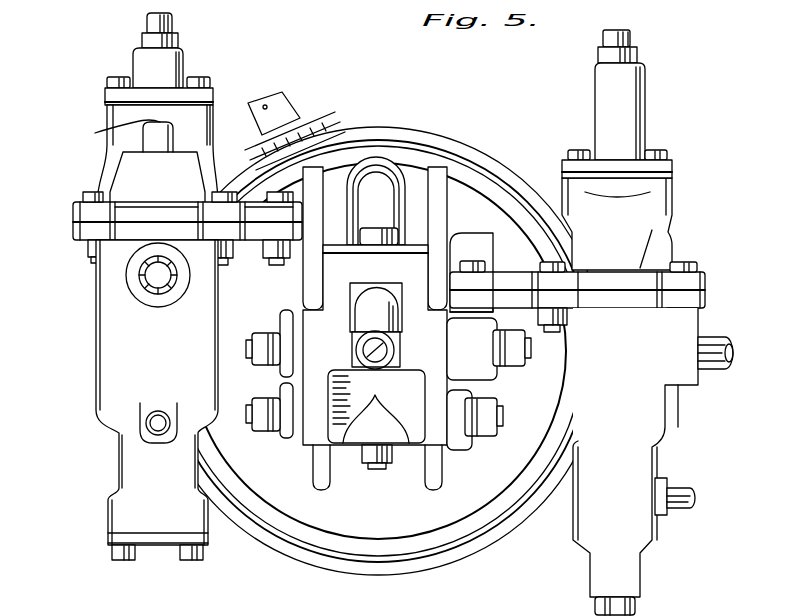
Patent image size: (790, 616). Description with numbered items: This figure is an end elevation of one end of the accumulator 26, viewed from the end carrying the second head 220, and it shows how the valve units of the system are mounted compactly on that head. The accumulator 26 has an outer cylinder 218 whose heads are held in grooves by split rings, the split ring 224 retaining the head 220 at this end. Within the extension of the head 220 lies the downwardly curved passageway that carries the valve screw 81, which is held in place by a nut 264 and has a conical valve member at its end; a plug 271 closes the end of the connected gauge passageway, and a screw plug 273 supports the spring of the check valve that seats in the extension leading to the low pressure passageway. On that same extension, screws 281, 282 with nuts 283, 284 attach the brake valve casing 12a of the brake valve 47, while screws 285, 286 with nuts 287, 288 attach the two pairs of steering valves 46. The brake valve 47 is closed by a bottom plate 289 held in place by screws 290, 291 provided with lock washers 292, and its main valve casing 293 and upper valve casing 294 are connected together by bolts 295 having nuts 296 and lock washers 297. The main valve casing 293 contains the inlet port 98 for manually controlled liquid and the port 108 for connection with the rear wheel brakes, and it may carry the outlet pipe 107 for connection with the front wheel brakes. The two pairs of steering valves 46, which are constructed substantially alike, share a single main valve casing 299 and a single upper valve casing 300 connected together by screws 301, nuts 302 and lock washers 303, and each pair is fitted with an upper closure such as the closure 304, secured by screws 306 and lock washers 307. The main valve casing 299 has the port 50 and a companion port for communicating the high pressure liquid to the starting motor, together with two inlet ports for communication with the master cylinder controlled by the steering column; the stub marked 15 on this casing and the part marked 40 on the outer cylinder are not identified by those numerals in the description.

The brake valve casing 12a is at (95, 392).
The outlet conduit 15 is at (687, 502).
The accumulator 26 is at (474, 126).
The band clamp fastener 40 is at (300, 95).
The steering valves 46 is at (712, 406).
The brake valve 47 is at (118, 200).
The port 50 is at (764, 348).
The valve screw 81 is at (388, 468).
The inlet port 98 is at (150, 426).
The outlet pipe 107 is at (95, 133).
The port 108 is at (155, 296).
The outer cylinder 218 is at (392, 574).
The head 220 is at (400, 528).
The split ring 224 is at (470, 540).
The nut 264 is at (368, 458).
The plug 271 is at (382, 357).
The screw plug 273 is at (412, 241).
The screw 281 is at (252, 334).
The screw 282 is at (250, 410).
The nut 283 is at (275, 433).
The nut 284 is at (285, 315).
The screw 285 is at (503, 412).
The screw 286 is at (527, 352).
The nut 287 is at (500, 440).
The nut 288 is at (520, 370).
The bottom plate 289 is at (160, 550).
The screw 290 is at (203, 563).
The screw 291 is at (113, 560).
The lock washer 292 is at (112, 552).
The main valve casing 293 is at (88, 285).
The upper valve casing 294 is at (118, 145).
The bolt 295 is at (88, 196).
The nut 296 is at (82, 262).
The lock washer 297 is at (82, 250).
The main valve casing 299 is at (665, 440).
The upper valve casing 300 is at (672, 195).
The screw 301 is at (552, 262).
The nut 302 is at (570, 322).
The lock washer 303 is at (700, 312).
The upper closure 304 is at (672, 168).
The screw 306 is at (580, 130).
The lock washer 307 is at (566, 153).